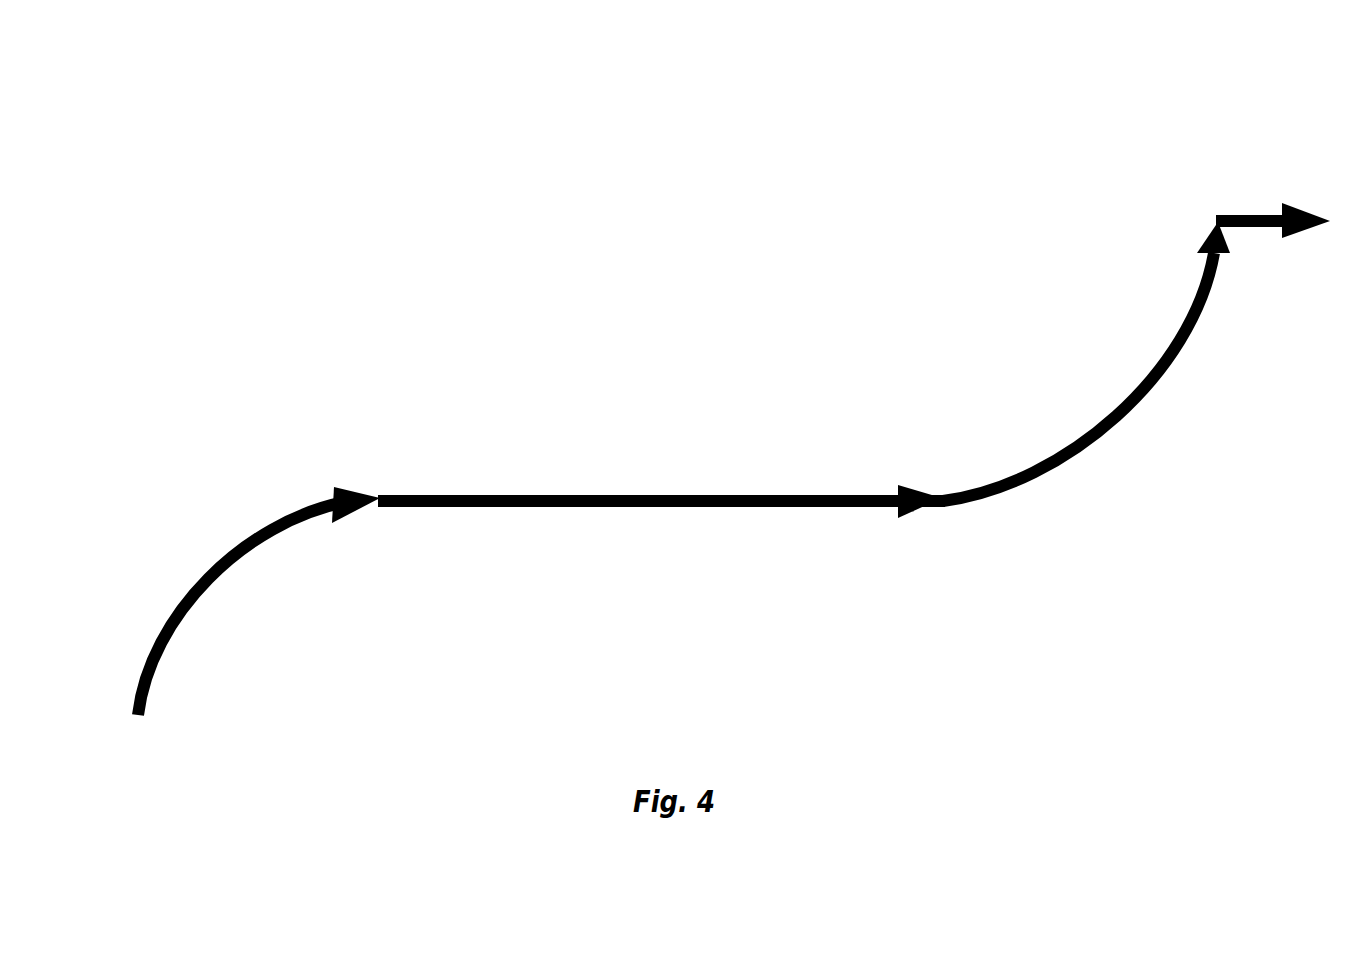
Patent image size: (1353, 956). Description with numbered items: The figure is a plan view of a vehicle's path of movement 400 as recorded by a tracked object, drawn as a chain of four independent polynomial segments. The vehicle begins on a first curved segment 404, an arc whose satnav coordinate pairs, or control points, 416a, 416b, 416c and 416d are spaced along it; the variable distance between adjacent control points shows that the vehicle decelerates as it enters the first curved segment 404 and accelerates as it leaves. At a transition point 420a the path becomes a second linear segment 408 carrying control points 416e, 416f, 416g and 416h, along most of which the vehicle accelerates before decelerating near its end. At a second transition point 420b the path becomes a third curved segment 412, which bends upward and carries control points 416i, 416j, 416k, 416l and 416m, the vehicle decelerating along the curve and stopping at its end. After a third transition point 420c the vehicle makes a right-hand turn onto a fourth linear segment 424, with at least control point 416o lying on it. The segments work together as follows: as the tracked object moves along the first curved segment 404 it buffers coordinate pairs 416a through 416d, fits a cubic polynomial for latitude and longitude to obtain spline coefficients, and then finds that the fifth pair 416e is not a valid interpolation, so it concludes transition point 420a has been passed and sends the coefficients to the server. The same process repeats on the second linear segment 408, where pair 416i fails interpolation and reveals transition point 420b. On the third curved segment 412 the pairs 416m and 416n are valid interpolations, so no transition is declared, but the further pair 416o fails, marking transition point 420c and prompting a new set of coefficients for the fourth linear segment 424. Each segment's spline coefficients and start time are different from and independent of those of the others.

The path of movement 400 is at (362, 355).
The first curved segment 404 is at (197, 577).
The second linear segment 408 is at (640, 494).
The third curved segment 412 is at (1127, 397).
The satnav coordinate pair 416a is at (142, 717).
The satnav coordinate pair 416b is at (162, 642).
The satnav coordinate pair 416c is at (205, 583).
The satnav coordinate pair 416d is at (287, 525).
The satnav coordinate pair 416e is at (433, 507).
The satnav coordinate pair 416f is at (640, 508).
The satnav coordinate pair 416g is at (802, 507).
The satnav coordinate pair 416h is at (913, 513).
The satnav coordinate pair 416i is at (1038, 477).
The satnav coordinate pair 416j is at (1107, 433).
The satnav coordinate pair 416k is at (1148, 390).
The satnav coordinate pair 416l is at (1177, 347).
The satnav coordinate pair 416m is at (1208, 283).
The satnav coordinate pair 416n is at (1217, 215).
The satnav coordinate pair 416o is at (1297, 208).
The transition point 420a is at (379, 497).
The transition point 420b is at (943, 497).
The transition point 420c is at (1217, 215).
The fourth linear segment 424 is at (1260, 214).